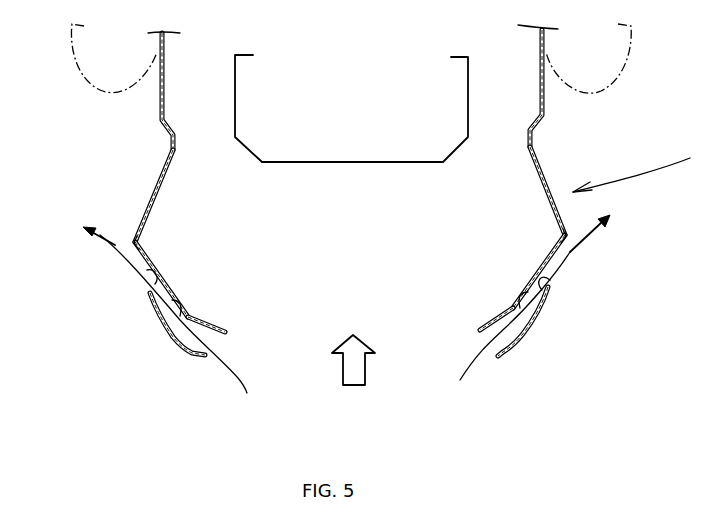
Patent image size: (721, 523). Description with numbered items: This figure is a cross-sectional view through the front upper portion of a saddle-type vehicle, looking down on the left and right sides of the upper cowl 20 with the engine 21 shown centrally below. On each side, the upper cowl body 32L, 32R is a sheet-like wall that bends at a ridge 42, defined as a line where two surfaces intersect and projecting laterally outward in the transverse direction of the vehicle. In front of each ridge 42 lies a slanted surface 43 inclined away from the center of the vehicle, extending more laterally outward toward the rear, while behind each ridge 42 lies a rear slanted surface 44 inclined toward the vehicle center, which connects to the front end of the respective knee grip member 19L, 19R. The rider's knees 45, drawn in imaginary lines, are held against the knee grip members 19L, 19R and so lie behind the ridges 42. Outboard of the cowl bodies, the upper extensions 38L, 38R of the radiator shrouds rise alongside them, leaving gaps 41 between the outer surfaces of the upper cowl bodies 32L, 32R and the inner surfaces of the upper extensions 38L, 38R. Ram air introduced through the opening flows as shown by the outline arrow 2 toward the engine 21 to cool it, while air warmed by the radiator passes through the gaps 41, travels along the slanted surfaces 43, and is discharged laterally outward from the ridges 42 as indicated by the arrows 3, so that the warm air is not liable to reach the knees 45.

The rider's knees 45 is at (88, 80).
The right knee grip member 19R is at (157, 95).
The left knee grip member 19L is at (547, 90).
The rear slanted surfaces 44 is at (148, 193).
The right upper cowl body 32R is at (172, 283).
The left upper cowl body 32L is at (533, 273).
The slanted surfaces 43 is at (190, 312).
The ridges 42 is at (133, 240).
The arrows 3 is at (130, 263).
The gaps 41 is at (150, 275).
The right upper extension 38R is at (167, 343).
The left upper extension 38L is at (523, 345).
The engine 21 is at (350, 137).
The upper cowl 20 is at (644, 171).
The outline arrow 2 is at (365, 368).